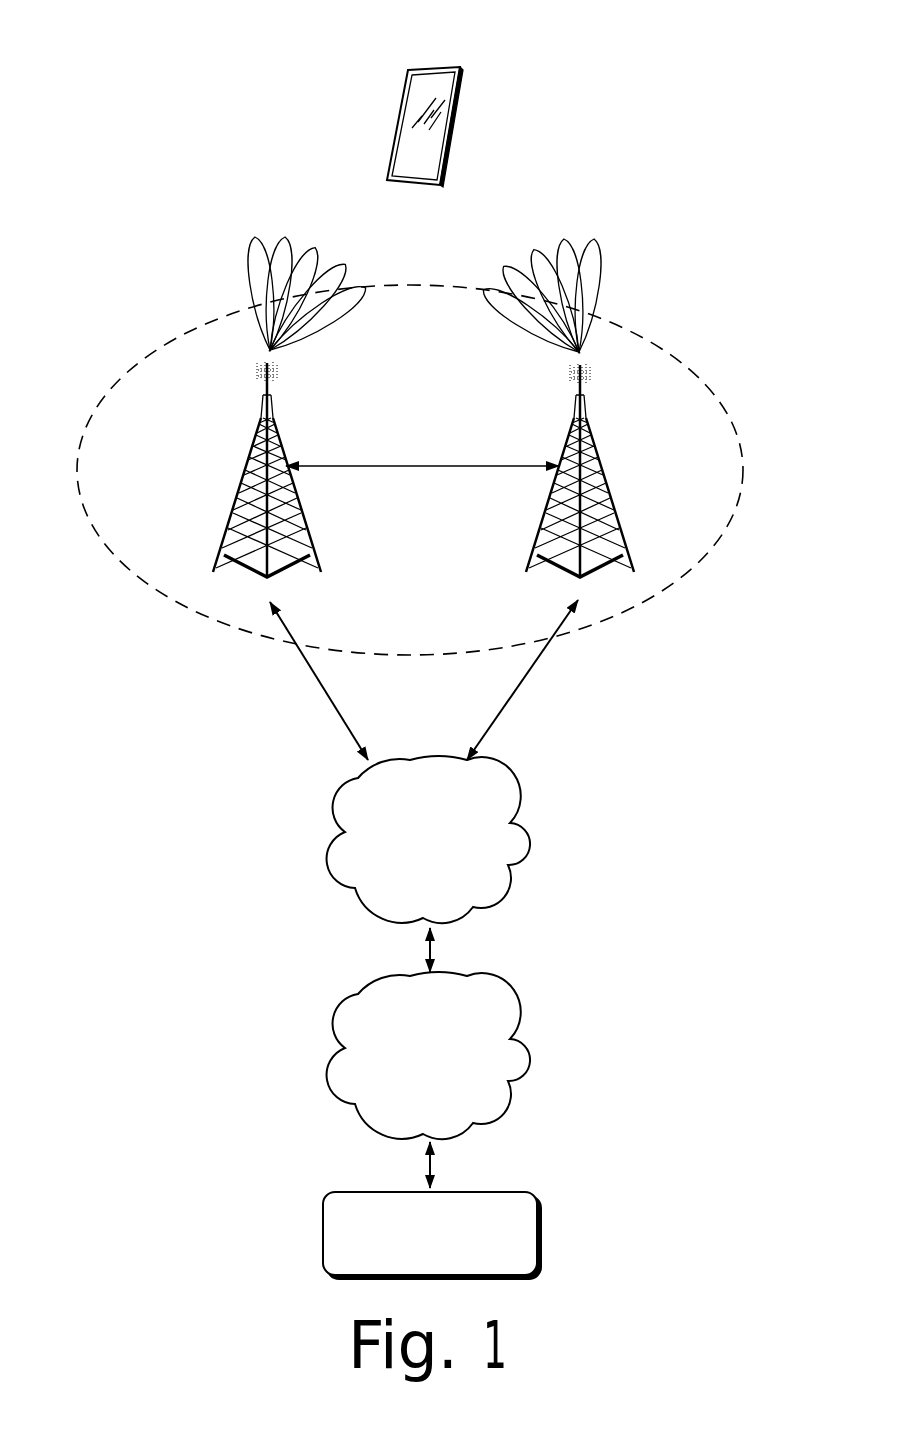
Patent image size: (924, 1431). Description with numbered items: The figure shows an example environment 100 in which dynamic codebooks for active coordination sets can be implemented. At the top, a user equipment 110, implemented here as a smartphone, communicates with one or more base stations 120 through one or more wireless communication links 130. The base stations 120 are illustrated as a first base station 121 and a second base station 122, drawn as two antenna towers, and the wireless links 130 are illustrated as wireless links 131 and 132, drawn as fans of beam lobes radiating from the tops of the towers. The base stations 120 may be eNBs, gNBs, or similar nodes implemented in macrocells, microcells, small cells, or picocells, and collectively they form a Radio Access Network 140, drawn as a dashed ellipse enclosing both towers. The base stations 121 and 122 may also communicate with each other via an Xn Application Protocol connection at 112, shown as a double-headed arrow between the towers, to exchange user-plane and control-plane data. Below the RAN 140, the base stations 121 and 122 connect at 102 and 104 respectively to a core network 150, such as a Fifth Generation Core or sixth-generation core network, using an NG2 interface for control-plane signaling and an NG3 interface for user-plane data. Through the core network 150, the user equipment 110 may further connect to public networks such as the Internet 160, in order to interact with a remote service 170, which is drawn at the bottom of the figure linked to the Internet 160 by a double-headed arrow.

The example environment 100 is at (128, 48).
The user equipment 110 is at (470, 62).
The wireless communication links 130 is at (471, 204).
The wireless link 131 is at (254, 236).
The wireless link 132 is at (593, 236).
The base stations 120 is at (440, 368).
The base station 121 is at (255, 447).
The base station 122 is at (594, 447).
The Radio Access Network 140 is at (723, 398).
The Xn Application Protocol connection 112 is at (389, 463).
The connection to core network 102 is at (335, 691).
The connection to core network 104 is at (486, 726).
The core network 150 is at (428, 839).
The Internet 160 is at (428, 1055).
The remote service 170 is at (432, 1235).